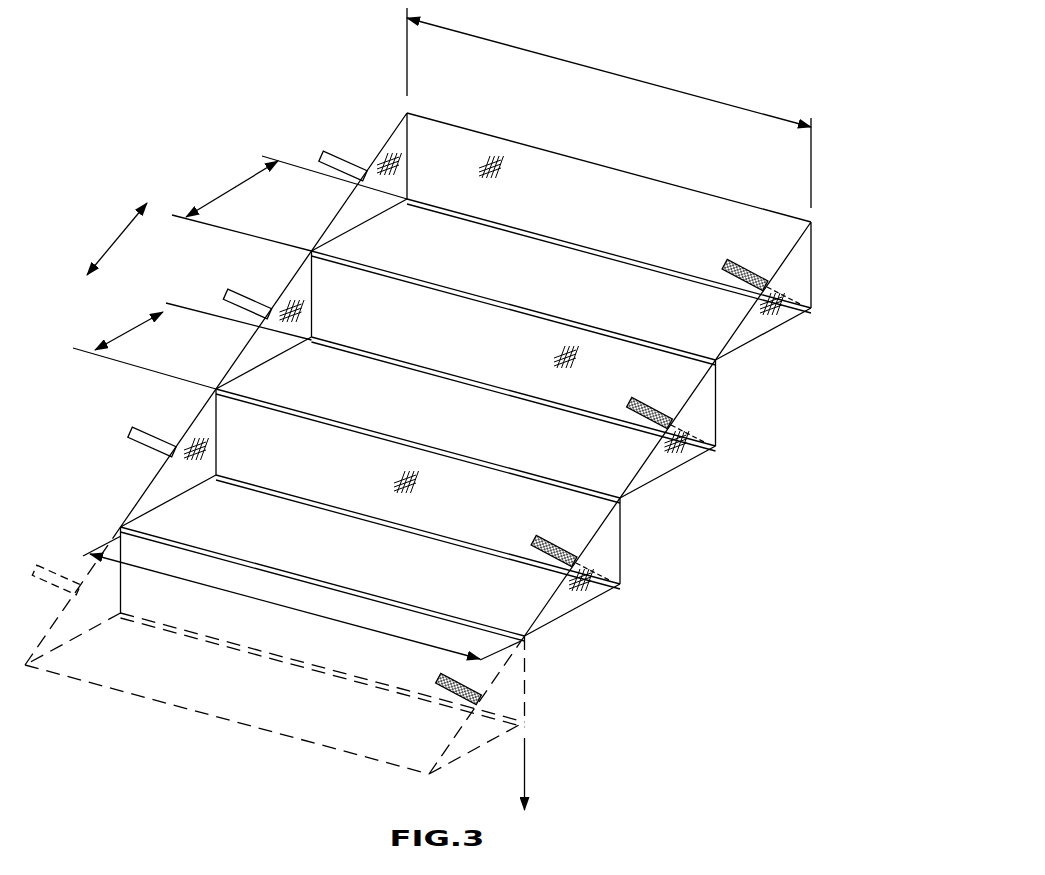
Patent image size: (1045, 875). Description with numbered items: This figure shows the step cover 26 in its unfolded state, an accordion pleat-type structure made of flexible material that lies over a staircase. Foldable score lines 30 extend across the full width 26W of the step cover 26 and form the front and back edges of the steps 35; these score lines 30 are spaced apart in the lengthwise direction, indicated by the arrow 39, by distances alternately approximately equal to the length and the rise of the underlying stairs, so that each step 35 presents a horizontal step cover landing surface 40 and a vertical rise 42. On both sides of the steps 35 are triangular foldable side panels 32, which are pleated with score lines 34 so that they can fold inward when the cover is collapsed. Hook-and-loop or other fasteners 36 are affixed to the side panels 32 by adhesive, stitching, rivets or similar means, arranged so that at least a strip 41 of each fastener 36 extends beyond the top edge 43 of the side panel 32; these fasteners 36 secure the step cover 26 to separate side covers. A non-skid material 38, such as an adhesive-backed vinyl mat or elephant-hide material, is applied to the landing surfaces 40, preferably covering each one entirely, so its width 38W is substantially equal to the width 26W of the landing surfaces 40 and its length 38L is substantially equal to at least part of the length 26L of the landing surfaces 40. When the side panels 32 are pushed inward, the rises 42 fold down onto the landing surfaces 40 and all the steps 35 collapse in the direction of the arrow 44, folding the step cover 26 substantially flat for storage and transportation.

The step cover 26 is at (250, 90).
The width of the step cover 26W is at (609, 108).
The length of the step cover landing surfaces 26L is at (232, 190).
The score lines 30 is at (527, 229).
The side panels 32 is at (388, 155).
The score lines 34 is at (690, 433).
The steps 35 is at (637, 261).
The fasteners 36 is at (248, 300).
The non-skid material 38 is at (168, 512).
The length of the non-skid material 38L is at (147, 320).
The width of the non-skid material 38W is at (300, 612).
The arrow indicating lengthwise direction 39 is at (113, 240).
The step cover landing surfaces 40 is at (433, 207).
The strip of the fastener 41 is at (648, 410).
The rise 42 is at (680, 366).
The top edge of the side panels 43 is at (553, 600).
The arrow indicating collapse direction 44 is at (524, 767).